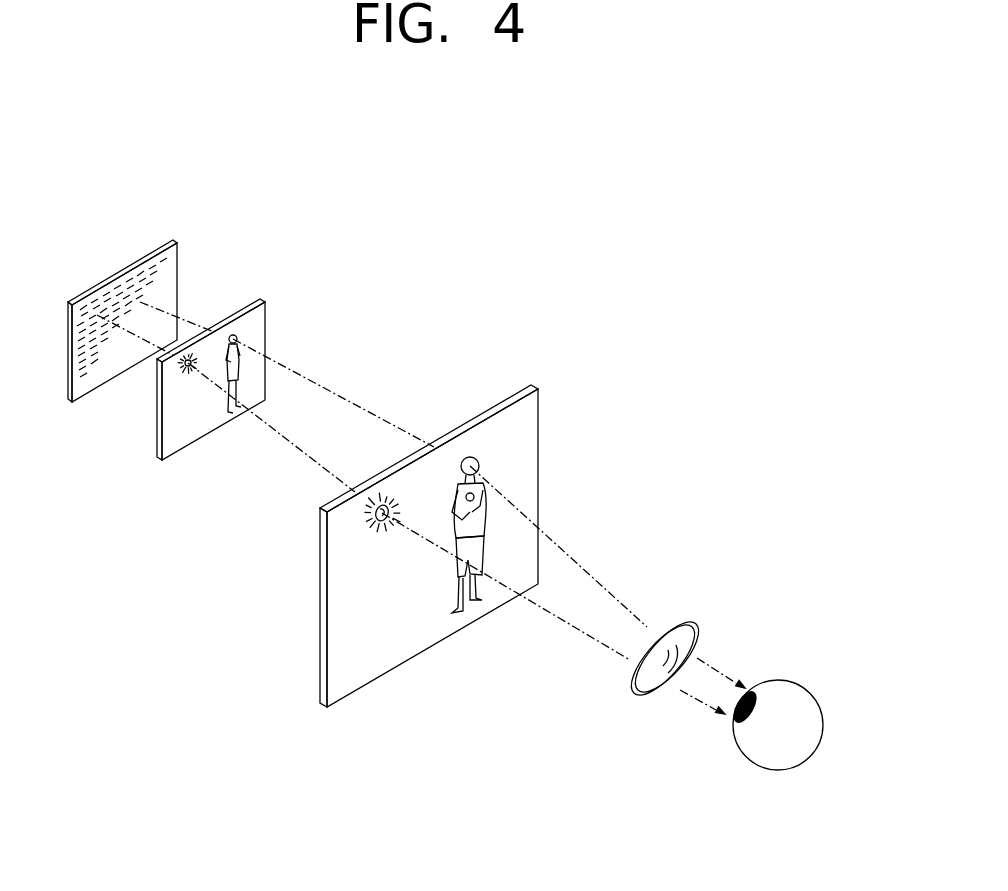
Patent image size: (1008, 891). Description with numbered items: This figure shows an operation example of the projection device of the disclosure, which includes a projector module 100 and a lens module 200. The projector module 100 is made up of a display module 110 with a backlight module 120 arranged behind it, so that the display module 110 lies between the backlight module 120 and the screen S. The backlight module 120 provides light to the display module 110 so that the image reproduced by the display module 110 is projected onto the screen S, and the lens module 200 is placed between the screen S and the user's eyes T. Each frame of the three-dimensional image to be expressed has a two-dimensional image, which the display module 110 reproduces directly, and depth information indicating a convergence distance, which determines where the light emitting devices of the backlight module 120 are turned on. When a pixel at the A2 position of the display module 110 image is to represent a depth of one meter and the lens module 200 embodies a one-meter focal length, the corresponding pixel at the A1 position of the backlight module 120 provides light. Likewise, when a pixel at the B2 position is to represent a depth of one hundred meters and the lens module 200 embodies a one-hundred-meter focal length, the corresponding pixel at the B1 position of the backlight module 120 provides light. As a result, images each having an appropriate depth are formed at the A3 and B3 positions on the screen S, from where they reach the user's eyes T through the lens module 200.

The projector module 100 is at (221, 313).
The display module 110 is at (243, 346).
The backlight module 120 is at (174, 293).
The A1 position A1 is at (156, 292).
The B1 position B1 is at (99, 313).
The A2 position A2 is at (239, 342).
The B2 position B2 is at (196, 371).
The A3 position A3 is at (472, 453).
The B3 position B3 is at (368, 523).
The screen S is at (442, 515).
The lens module 200 is at (693, 616).
The user's eyes T is at (808, 682).